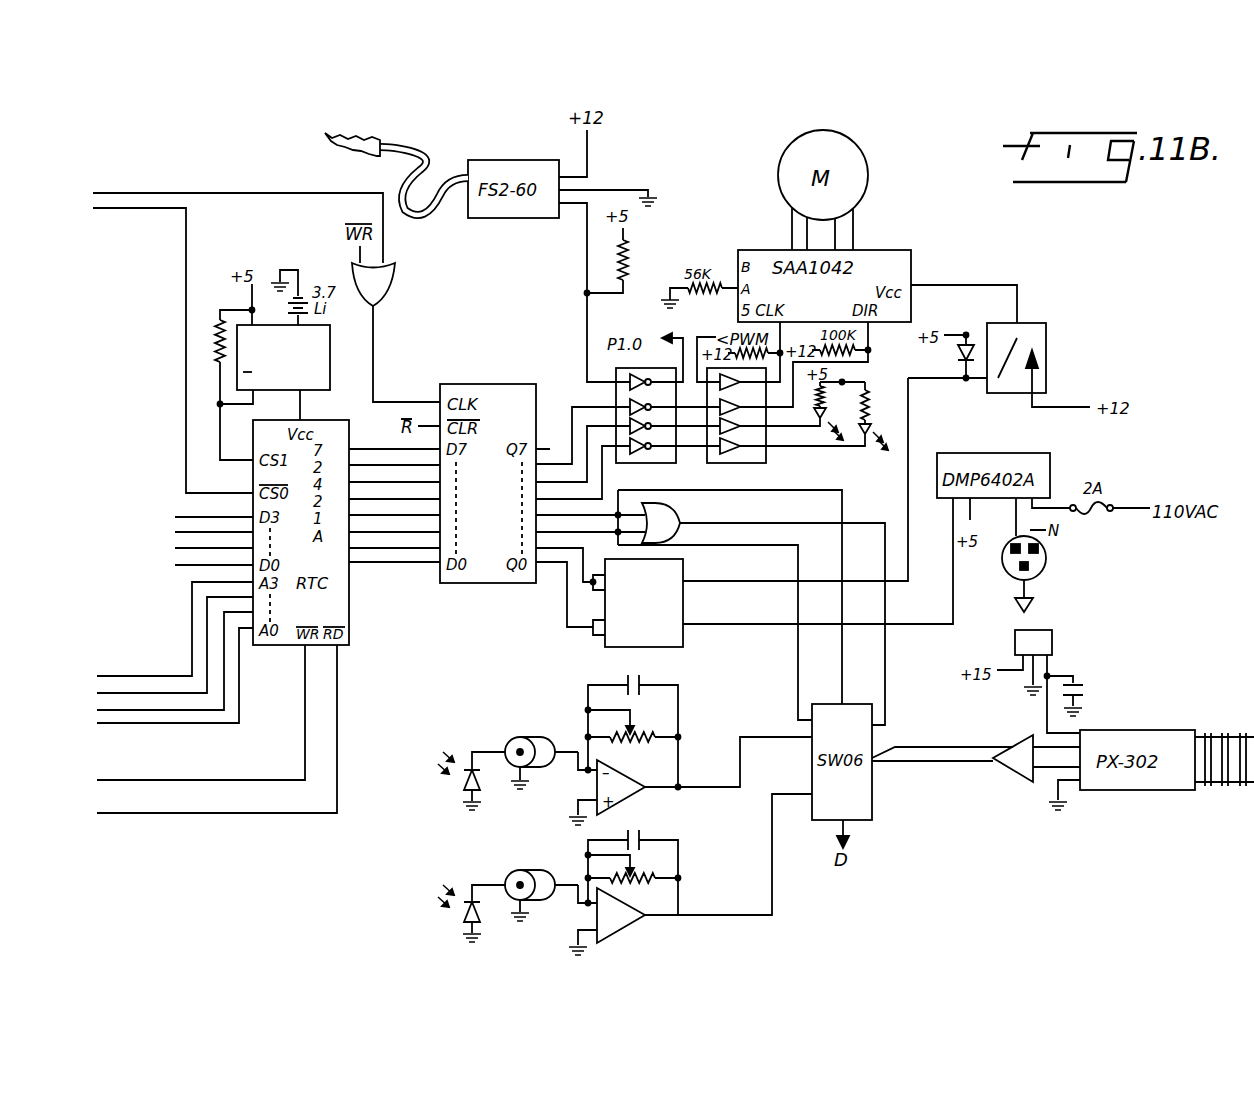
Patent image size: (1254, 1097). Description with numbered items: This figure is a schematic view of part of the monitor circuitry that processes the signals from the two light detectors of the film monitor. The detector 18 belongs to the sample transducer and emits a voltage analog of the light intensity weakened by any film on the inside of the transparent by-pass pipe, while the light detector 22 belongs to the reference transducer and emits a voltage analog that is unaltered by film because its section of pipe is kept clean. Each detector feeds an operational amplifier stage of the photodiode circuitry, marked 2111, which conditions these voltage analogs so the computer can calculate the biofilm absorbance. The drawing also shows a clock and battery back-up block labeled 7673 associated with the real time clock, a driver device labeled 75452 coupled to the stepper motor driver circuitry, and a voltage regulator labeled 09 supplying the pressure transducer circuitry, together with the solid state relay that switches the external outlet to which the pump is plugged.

The light detector 22 is at (523, 728).
The detector 18 is at (501, 863).
The operational amplifier 2111 is at (639, 917).
The real time clock battery backup circuit 7673 is at (283, 357).
The driver 75452 is at (638, 603).
The voltage regulator 09 is at (1033, 642).